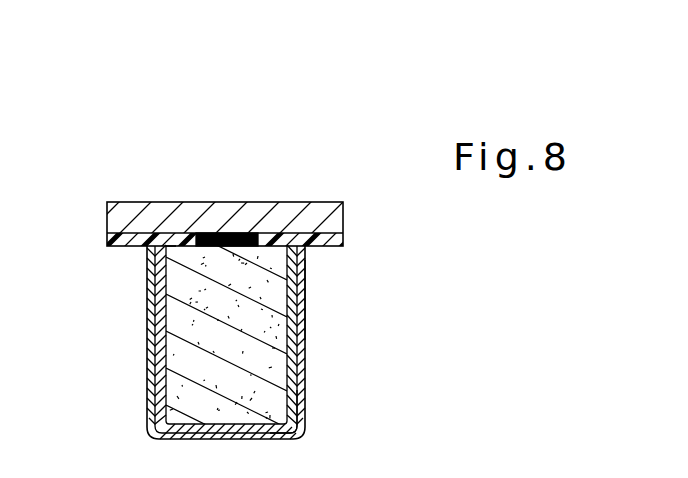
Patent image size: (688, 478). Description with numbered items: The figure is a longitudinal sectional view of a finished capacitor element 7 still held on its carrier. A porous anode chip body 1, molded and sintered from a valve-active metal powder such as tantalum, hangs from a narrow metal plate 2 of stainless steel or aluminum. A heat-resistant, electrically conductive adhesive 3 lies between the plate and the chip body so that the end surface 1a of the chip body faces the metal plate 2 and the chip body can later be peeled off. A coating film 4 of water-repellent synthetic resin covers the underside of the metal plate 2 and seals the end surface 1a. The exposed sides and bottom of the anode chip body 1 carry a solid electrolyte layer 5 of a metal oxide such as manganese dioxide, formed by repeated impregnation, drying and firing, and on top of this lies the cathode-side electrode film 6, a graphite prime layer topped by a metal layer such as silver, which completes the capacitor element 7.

The anode chip body 1 is at (183, 361).
The end surface 1a is at (172, 245).
The metal plate 2 is at (304, 201).
The electrically conductive adhesive 3 is at (232, 234).
The film 4 is at (343, 242).
The solid electrolyte layer 5 is at (302, 302).
The cathode-side electrode film 6 is at (296, 397).
The capacitor element 7 is at (320, 345).